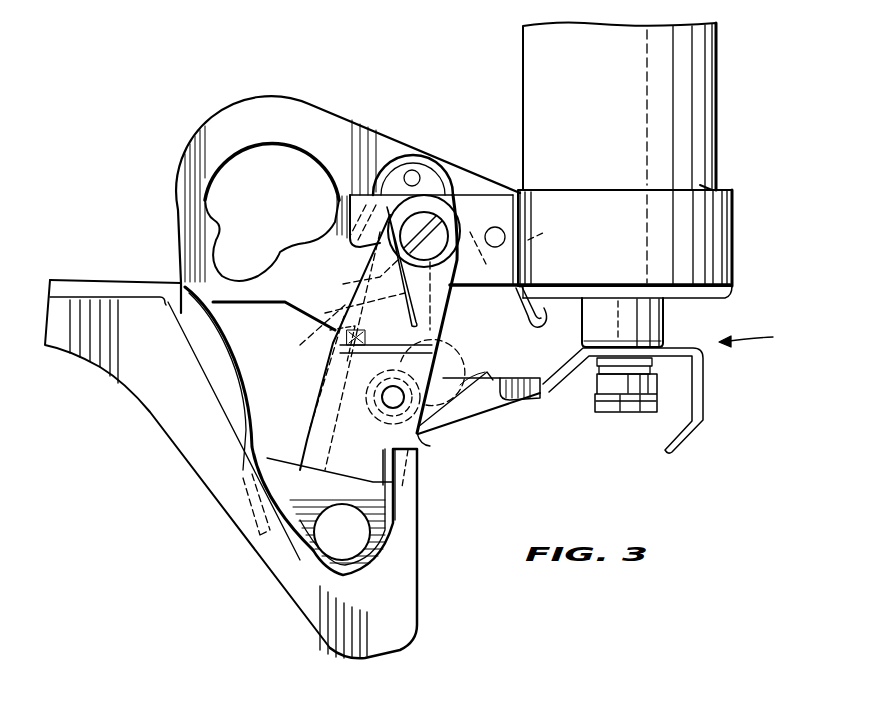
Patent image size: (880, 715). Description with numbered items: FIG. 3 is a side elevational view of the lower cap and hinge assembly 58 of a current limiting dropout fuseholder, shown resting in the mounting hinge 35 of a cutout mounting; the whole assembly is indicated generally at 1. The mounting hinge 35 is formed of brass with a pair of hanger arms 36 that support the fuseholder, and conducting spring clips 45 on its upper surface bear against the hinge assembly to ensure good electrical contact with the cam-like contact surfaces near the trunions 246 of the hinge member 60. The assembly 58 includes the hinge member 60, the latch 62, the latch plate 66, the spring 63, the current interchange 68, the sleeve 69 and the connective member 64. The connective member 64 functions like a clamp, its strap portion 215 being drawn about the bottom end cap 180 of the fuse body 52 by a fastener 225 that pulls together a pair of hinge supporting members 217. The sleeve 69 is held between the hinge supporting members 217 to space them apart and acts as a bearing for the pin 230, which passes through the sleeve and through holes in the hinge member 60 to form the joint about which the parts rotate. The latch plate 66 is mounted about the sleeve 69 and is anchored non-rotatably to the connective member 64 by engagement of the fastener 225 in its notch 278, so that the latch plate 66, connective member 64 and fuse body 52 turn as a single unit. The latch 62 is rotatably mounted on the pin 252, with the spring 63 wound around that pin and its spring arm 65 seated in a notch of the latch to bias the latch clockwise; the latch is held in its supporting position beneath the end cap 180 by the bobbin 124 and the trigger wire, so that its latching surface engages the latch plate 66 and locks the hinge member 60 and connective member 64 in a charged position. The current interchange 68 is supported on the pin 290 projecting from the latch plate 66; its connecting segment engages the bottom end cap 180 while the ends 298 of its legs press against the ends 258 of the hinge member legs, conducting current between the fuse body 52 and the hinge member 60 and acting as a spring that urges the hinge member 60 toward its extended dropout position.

The firearm trigger assembly 1 is at (755, 340).
The mounting hinge 35 is at (195, 436).
The hanger arms 36 is at (390, 588).
The conducting spring clips 45 is at (242, 356).
The fuse body 52 is at (695, 52).
The lower cap and hinge assembly 58 is at (355, 54).
The hinge member 60 is at (410, 440).
The latch 62 is at (505, 396).
The spring 63 is at (318, 402).
The connective member 64 is at (705, 197).
The spring arm 65 is at (462, 383).
The latch plate 66 is at (333, 125).
The current interchange 68 is at (370, 177).
The sleeve 69 is at (447, 292).
The bobbin 124 is at (610, 414).
The bottom end cap 180 is at (725, 296).
The strap portion 215 is at (678, 242).
The hinge supporting members 217 is at (462, 195).
The fastener 225 is at (496, 226).
The pin 230 is at (368, 248).
The trunions 246 is at (537, 326).
The pin 252 is at (388, 405).
The ends 258 is at (336, 344).
The notch 278 is at (546, 234).
The pin 290 is at (411, 170).
The ends 298 is at (352, 282).